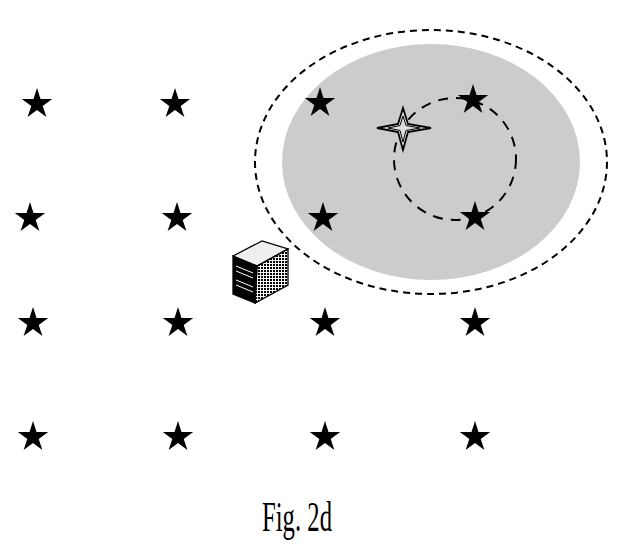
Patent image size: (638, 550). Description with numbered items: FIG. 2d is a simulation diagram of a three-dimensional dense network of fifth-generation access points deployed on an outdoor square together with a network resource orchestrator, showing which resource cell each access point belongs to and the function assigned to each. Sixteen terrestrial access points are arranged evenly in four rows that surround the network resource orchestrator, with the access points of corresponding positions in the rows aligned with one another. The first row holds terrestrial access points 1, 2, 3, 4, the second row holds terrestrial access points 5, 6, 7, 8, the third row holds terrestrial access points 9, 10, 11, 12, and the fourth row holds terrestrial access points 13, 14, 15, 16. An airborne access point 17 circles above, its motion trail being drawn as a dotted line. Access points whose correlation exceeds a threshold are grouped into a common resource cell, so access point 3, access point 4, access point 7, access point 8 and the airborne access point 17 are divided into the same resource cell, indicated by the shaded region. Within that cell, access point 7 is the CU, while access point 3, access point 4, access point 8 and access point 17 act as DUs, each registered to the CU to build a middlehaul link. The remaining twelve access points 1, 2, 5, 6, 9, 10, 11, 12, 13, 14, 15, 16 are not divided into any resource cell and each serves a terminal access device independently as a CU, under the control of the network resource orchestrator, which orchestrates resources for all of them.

The terrestrial access point 1 is at (53, 106).
The terrestrial access point 2 is at (187, 106).
The terrestrial access point 3 is at (331, 104).
The terrestrial access point 4 is at (484, 104).
The terrestrial access point 5 is at (50, 218).
The terrestrial access point 6 is at (192, 218).
The terrestrial access point 7 is at (335, 216).
The terrestrial access point 8 is at (487, 216).
The terrestrial access point 9 is at (53, 325).
The terrestrial access point 10 is at (201, 325).
The terrestrial access point 11 is at (346, 325).
The terrestrial access point 12 is at (498, 325).
The terrestrial access point 13 is at (62, 436).
The terrestrial access point 14 is at (202, 436).
The terrestrial access point 15 is at (346, 436).
The terrestrial access point 16 is at (498, 436).
The airborne access point 17 is at (410, 146).